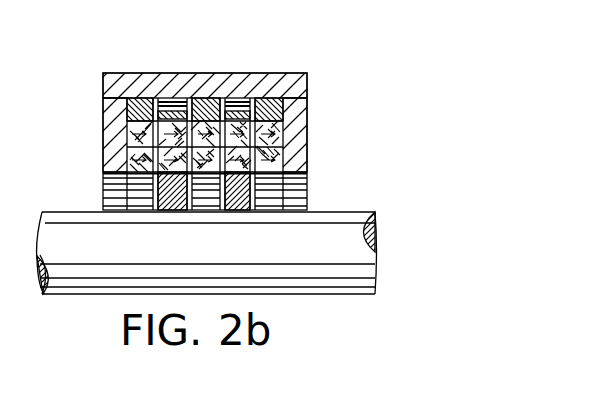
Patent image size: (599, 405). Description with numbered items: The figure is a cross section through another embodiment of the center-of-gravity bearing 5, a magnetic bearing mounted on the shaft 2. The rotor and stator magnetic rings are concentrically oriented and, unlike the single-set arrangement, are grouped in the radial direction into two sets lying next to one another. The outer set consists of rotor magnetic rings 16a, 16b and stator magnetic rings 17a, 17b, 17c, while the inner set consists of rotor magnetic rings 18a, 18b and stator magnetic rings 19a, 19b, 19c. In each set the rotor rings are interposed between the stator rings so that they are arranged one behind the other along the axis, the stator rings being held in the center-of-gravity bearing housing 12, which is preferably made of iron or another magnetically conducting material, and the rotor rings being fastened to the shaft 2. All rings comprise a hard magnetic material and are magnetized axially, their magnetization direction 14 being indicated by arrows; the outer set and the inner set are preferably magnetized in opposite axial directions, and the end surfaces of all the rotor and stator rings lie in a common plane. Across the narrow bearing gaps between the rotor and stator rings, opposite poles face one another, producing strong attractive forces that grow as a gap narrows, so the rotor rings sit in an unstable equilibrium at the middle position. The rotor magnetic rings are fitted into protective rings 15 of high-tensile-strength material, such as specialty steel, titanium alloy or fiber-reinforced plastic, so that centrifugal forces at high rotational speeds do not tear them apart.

The shaft 2 is at (326, 229).
The center-of-gravity bearing 5 is at (85, 73).
The center-of-gravity bearing housing 12 is at (116, 138).
The magnetization direction 14 is at (297, 146).
The protective rings 15 is at (183, 77).
The outer rotor magnetic ring 16a is at (146, 78).
The outer rotor magnetic ring 16b is at (259, 78).
The outer stator magnetic ring 17a is at (125, 124).
The outer stator magnetic ring 17b is at (198, 98).
The outer stator magnetic ring 17c is at (285, 118).
The inner rotor magnetic ring 18a is at (168, 182).
The inner rotor magnetic ring 18b is at (240, 180).
The inner stator magnetic ring 19a is at (108, 182).
The inner stator magnetic ring 19b is at (207, 186).
The inner stator magnetic ring 19c is at (291, 177).